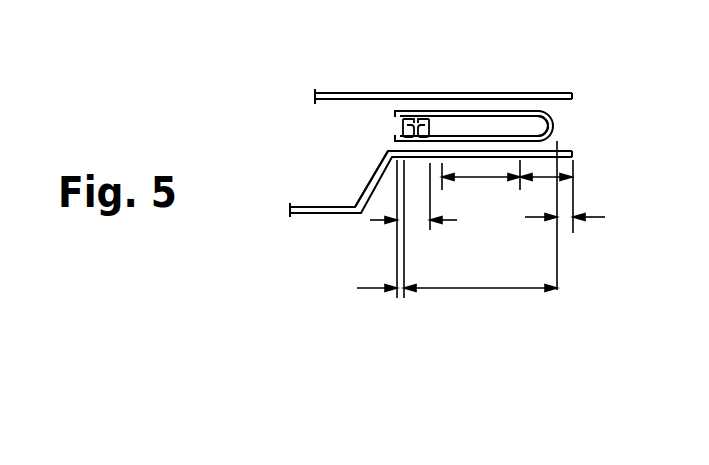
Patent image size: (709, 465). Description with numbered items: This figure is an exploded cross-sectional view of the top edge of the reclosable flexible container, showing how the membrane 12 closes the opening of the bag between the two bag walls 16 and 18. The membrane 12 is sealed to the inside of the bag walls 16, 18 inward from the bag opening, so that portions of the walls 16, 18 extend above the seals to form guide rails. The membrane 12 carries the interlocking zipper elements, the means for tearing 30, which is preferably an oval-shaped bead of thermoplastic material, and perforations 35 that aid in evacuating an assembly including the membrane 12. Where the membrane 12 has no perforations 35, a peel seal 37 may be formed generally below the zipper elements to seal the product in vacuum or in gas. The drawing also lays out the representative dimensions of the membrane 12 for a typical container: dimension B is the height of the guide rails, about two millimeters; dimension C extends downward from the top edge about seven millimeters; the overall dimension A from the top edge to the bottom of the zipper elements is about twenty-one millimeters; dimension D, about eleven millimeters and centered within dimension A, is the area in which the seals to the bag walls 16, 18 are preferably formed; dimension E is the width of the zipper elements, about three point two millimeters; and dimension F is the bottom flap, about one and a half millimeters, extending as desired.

The membrane 12 is at (533, 110).
The bag wall 16 is at (335, 93).
The bag wall 18 is at (314, 205).
The means for tearing 30 is at (553, 122).
The perforations 35 is at (499, 24).
The peel seal 37 is at (360, 192).
The overall dimension A is at (496, 288).
The guide rail dimension B is at (563, 218).
The top edge dimension C is at (543, 176).
The seal area dimension D is at (487, 182).
The zipper element width E is at (418, 220).
The bottom flap dimension F is at (398, 300).